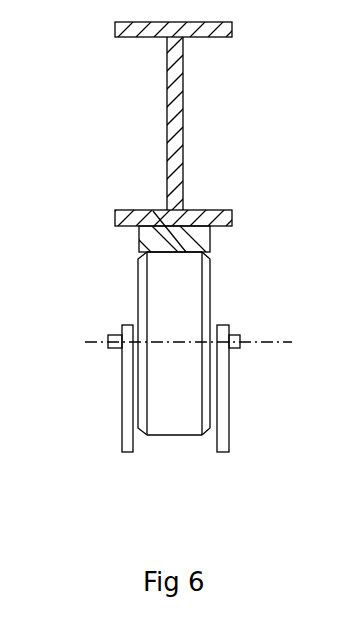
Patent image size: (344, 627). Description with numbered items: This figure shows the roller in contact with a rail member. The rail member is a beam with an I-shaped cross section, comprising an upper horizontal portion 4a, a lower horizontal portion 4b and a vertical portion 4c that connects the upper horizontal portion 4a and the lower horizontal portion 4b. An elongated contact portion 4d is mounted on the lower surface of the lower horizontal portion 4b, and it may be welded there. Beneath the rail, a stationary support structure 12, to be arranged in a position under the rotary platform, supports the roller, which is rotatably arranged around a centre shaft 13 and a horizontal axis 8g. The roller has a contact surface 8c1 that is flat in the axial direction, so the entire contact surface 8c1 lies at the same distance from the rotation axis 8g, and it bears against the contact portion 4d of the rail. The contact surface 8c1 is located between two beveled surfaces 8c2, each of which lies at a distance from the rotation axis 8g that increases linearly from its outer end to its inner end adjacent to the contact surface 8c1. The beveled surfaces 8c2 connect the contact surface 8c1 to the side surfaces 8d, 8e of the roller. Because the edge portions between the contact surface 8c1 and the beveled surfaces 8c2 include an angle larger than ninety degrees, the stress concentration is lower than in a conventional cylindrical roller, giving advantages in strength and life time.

The upper horizontal portion 4a is at (122, 35).
The lower horizontal portion 4b is at (120, 212).
The vertical portion 4c is at (177, 133).
The elongated contact portion 4d is at (182, 238).
The contact surface 8c1 is at (180, 407).
The beveled surfaces 8c2 is at (143, 413).
The side surface 8d is at (138, 293).
The side surface 8e is at (210, 300).
The horizontal axis 8g is at (258, 345).
The stationary support structure 12 is at (128, 395).
The centre shaft 13 is at (120, 340).